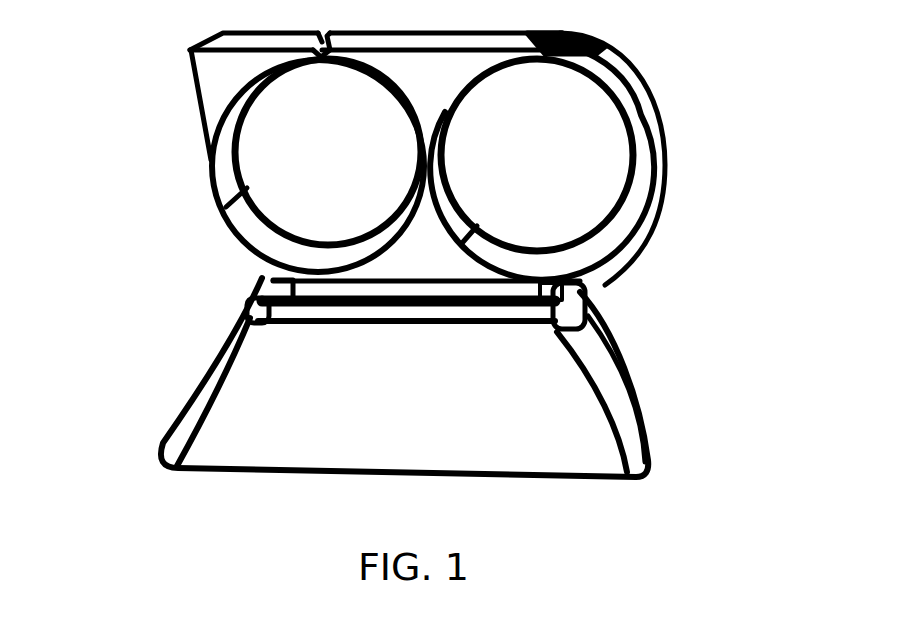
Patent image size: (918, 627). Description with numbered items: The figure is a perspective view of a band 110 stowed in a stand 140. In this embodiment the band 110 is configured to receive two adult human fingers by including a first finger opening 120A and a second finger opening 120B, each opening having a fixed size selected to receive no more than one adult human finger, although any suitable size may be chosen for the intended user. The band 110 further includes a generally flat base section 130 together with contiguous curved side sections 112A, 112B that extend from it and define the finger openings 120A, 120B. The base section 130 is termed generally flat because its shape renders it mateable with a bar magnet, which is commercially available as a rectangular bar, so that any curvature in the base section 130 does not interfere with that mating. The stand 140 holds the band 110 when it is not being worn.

The band 110 is at (662, 178).
The curved side section 112A is at (172, 197).
The curved side section 112B is at (683, 233).
The first finger opening 120A is at (224, 230).
The second finger opening 120B is at (557, 262).
The base section 130 is at (240, 300).
The stand 140 is at (234, 423).